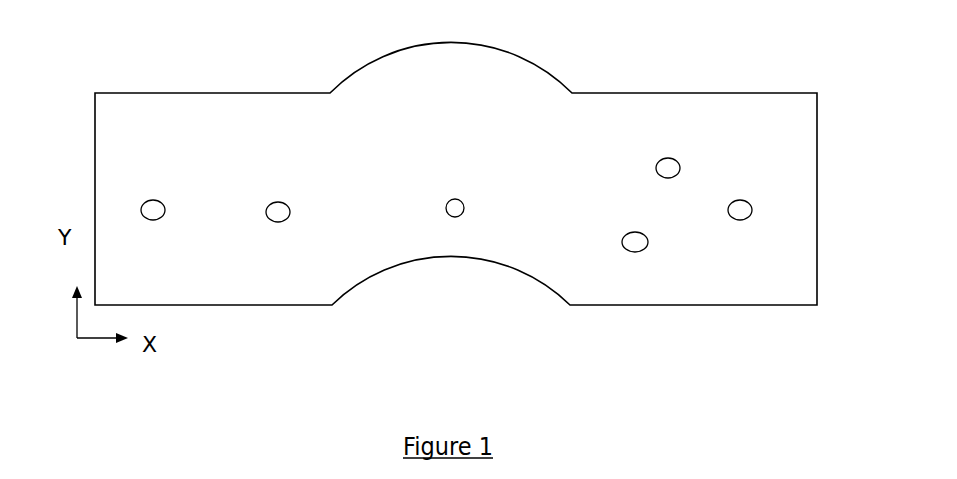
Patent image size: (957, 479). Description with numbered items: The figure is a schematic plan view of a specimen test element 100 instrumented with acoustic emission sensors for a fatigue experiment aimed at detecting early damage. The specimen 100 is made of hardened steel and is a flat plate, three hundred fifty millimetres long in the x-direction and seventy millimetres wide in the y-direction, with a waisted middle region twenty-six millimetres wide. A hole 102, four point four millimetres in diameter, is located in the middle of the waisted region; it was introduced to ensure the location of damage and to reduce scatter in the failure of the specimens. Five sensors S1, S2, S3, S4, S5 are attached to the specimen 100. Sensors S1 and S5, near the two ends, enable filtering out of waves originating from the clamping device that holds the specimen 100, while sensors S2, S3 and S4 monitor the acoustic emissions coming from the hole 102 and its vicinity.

The specimen test element 100 is at (768, 120).
The hole 102 is at (456, 222).
The sensor S1 is at (152, 205).
The sensor S2 is at (278, 208).
The sensor S3 is at (635, 242).
The sensor S4 is at (668, 168).
The sensor S5 is at (740, 210).